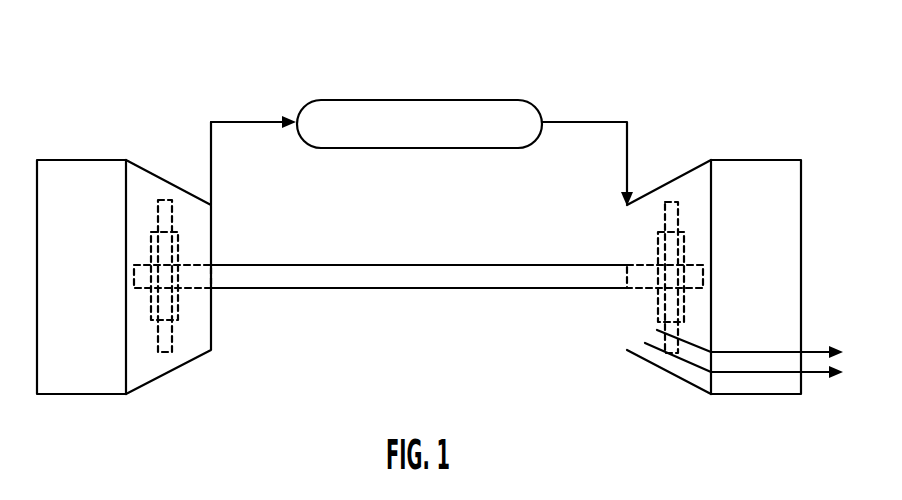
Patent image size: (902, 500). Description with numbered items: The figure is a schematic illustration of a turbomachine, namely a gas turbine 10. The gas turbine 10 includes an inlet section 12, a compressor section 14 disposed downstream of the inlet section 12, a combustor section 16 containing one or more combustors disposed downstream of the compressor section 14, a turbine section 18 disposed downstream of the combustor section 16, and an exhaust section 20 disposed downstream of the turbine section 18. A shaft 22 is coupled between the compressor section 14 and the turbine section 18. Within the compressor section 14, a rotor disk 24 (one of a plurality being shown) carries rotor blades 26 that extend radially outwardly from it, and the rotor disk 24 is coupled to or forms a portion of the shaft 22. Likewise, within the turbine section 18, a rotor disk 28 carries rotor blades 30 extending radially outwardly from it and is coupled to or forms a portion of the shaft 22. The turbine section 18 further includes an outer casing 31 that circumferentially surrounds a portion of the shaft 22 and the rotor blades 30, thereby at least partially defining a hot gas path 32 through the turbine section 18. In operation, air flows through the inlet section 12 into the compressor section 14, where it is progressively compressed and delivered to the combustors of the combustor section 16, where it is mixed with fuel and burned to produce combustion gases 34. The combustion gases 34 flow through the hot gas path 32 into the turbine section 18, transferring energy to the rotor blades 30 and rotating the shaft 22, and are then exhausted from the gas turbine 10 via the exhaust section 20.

The gas turbine 10 is at (262, 60).
The inlet section 12 is at (55, 160).
The compressor section 14 is at (158, 173).
The combustor section 16 is at (476, 100).
The turbine section 18 is at (696, 167).
The exhaust section 20 is at (777, 160).
The shaft 22 is at (367, 290).
The rotor disk 24 is at (148, 249).
The rotor blade 26 is at (153, 208).
The rotor disk 28 is at (657, 242).
The rotor blade 30 is at (674, 200).
The outer casing 31 is at (692, 387).
The hot gas path 32 is at (664, 370).
The combustion gases 34 is at (573, 123).